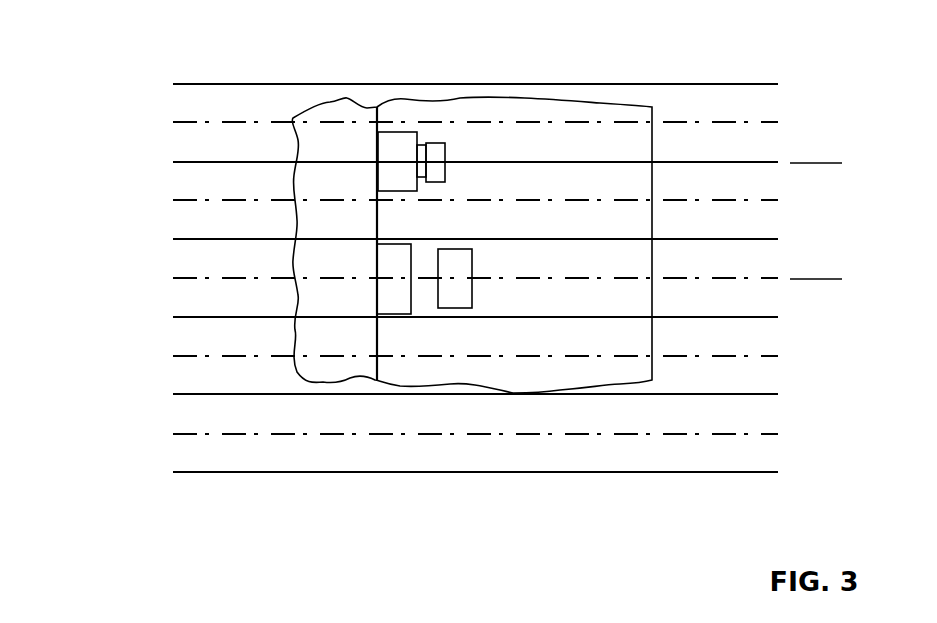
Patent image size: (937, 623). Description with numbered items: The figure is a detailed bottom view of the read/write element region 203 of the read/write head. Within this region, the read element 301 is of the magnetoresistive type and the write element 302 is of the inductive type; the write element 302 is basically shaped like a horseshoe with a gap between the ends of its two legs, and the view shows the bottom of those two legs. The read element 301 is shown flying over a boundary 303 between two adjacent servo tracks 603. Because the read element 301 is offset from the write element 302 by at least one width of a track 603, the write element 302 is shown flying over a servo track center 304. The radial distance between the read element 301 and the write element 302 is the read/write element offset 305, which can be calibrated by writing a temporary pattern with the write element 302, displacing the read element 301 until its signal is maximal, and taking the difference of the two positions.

The read/write element region 203 is at (626, 104).
The read element 301 is at (418, 136).
The write element 302 is at (405, 512).
The boundary 303 is at (160, 162).
The servo track center 304 is at (160, 278).
The read/write element offset 305 is at (816, 166).
The servo tracks 603 is at (800, 357).